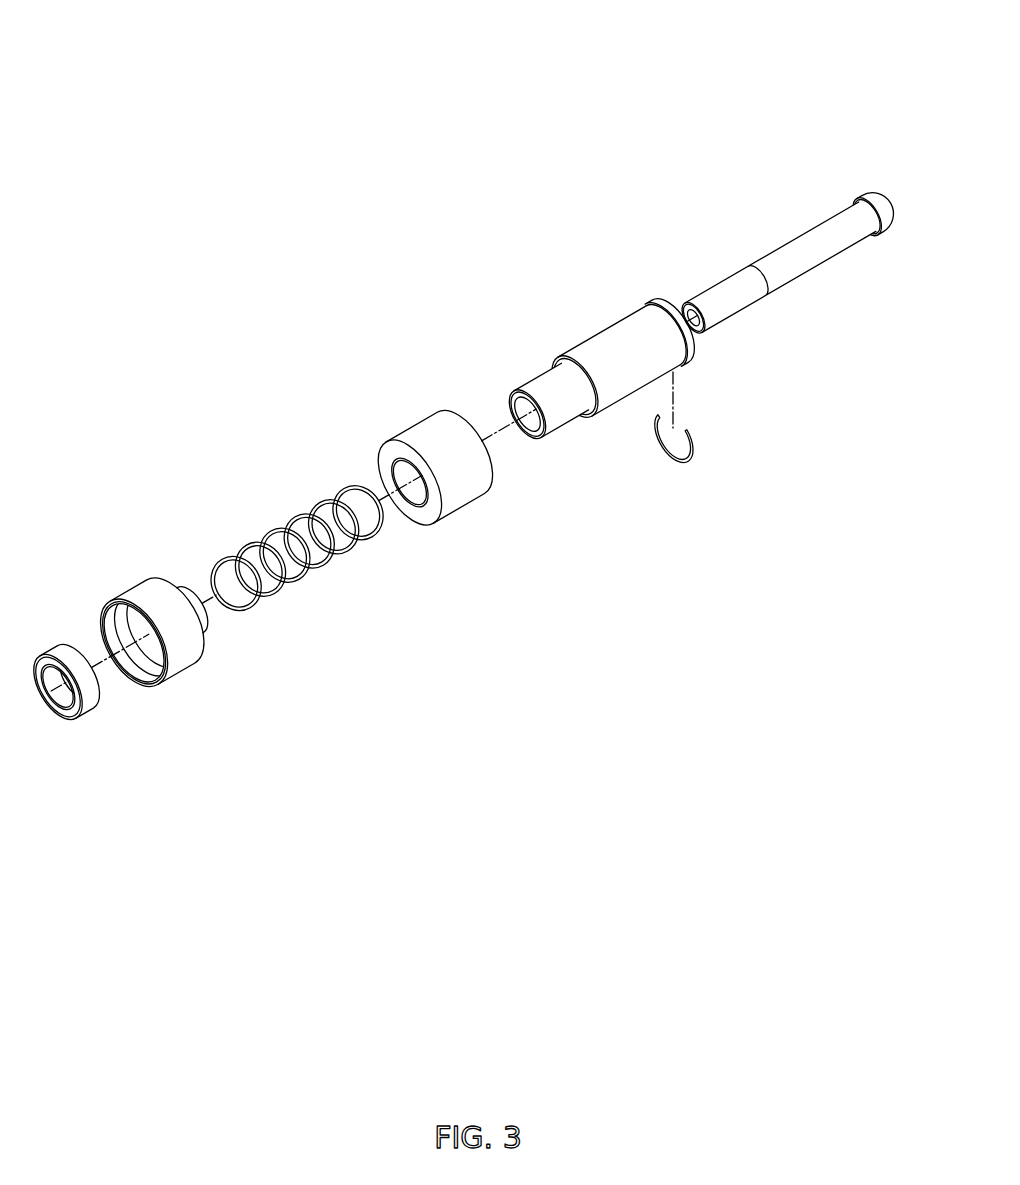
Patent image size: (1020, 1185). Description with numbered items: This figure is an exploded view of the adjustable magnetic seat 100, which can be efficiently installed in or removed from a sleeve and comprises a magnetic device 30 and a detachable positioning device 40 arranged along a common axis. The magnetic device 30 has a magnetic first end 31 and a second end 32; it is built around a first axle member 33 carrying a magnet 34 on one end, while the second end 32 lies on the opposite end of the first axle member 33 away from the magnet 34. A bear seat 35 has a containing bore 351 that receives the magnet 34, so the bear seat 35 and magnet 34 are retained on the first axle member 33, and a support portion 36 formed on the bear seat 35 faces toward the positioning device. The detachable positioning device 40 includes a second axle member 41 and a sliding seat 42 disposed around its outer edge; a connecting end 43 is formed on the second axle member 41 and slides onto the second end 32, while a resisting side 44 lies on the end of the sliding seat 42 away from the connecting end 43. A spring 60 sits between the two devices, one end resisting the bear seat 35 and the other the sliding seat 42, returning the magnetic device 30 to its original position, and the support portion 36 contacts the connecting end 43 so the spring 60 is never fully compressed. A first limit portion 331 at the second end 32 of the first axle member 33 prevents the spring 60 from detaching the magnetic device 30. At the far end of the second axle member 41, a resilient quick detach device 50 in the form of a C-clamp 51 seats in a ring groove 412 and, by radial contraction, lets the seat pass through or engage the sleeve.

The adjustable magnetic seat 100 is at (670, 46).
The magnetic device 30 is at (262, 507).
The first end 31 is at (148, 677).
The second end 32 is at (872, 190).
The first axle member 33 is at (808, 237).
The first limit portion 331 is at (878, 236).
The magnet 34 is at (86, 712).
The bear seat 35 is at (187, 662).
The containing bore 351 is at (118, 627).
The support portion 36 is at (208, 622).
The detachable positioning device 40 is at (543, 340).
The second axle member 41 is at (613, 338).
The ring groove 412 is at (683, 347).
The sliding seat 42 is at (430, 427).
The connecting end 43 is at (560, 417).
The resisting side 44 is at (497, 462).
The resilient quick detach device 50 is at (687, 473).
The C-clamp 51 is at (693, 443).
The spring 60 is at (315, 570).